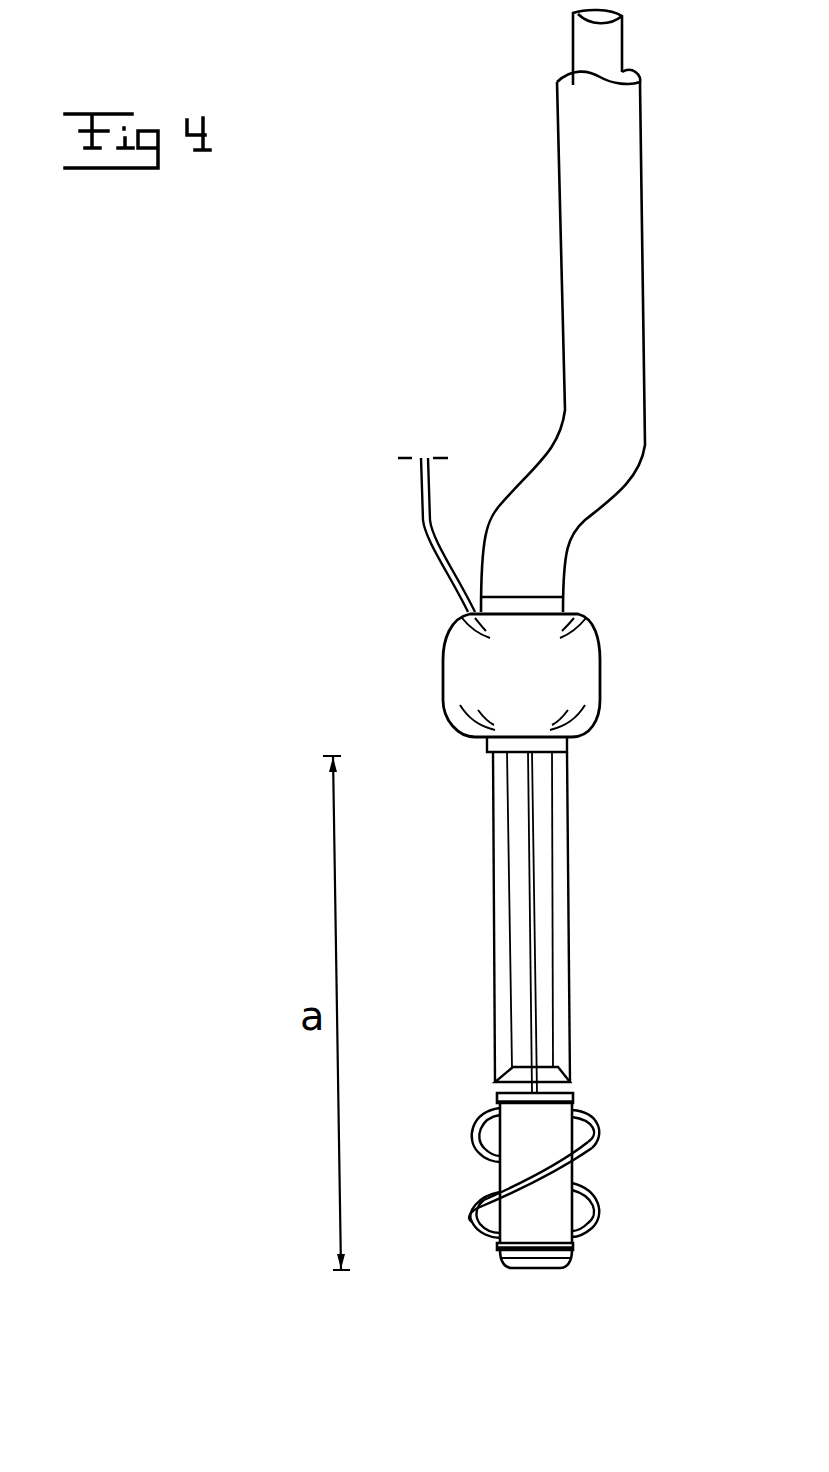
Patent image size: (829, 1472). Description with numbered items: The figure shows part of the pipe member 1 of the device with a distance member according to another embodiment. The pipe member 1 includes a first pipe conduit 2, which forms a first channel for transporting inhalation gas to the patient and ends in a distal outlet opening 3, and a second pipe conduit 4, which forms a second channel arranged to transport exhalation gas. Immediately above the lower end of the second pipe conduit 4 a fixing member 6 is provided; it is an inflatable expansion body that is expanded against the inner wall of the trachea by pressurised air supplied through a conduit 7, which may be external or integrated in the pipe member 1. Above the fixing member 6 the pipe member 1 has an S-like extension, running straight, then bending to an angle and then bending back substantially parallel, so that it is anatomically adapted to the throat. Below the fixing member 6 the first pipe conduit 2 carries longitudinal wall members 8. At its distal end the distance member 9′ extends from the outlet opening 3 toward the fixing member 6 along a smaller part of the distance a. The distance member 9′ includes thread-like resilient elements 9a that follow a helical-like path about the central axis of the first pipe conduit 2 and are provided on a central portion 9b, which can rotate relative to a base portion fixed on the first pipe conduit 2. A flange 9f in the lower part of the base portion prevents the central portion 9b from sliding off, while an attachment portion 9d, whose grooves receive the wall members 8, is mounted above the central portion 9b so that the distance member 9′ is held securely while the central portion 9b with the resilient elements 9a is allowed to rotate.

The pipe member 1 is at (405, 290).
The first pipe conduit 2 is at (543, 886).
The distal outlet opening 3 is at (545, 1268).
The second pipe conduit 4 is at (617, 373).
The fixing member 6 is at (572, 662).
The conduit 7 is at (443, 548).
The wall member 8 is at (502, 995).
The distance member 9′ is at (687, 1104).
The resilient element 9a is at (598, 1207).
The central portion 9b is at (586, 1158).
The attachment portion 9d is at (497, 1092).
The flange 9f is at (522, 1257).